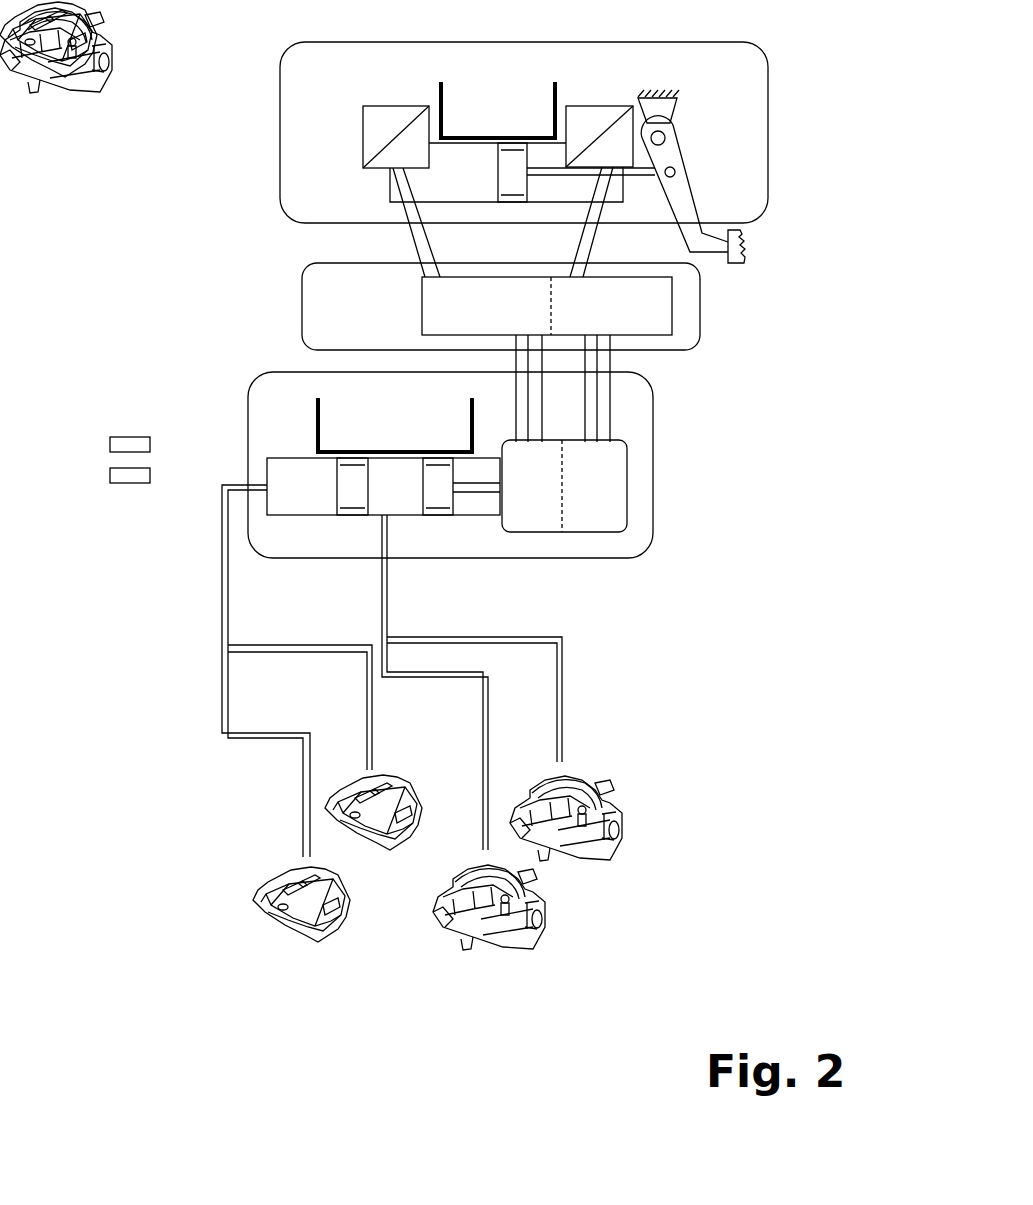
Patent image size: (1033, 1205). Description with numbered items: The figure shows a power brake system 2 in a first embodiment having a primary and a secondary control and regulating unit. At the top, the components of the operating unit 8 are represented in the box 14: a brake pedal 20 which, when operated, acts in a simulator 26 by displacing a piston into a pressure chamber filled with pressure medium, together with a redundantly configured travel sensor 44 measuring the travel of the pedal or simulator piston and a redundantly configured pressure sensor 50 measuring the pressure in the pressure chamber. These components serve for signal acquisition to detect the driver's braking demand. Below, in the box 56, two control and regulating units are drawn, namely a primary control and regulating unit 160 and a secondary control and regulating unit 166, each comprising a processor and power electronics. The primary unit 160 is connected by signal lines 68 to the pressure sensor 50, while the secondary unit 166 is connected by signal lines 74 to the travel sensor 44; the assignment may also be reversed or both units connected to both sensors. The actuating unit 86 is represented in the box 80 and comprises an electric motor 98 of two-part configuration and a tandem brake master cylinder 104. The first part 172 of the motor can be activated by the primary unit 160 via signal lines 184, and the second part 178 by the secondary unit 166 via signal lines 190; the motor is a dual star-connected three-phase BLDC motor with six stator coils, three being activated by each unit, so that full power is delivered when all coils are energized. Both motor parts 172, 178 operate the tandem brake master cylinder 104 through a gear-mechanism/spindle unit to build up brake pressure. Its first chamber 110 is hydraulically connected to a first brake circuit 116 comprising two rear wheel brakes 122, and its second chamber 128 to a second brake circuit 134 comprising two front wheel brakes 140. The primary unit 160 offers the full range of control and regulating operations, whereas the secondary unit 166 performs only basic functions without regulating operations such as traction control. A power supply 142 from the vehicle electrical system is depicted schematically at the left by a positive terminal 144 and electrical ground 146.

The power brake system 2 is at (213, 40).
The box 14 is at (768, 92).
The operating unit 8 is at (488, 78).
The simulator 26 is at (470, 202).
The pressure sensor 50 is at (393, 106).
The travel sensor 44 is at (602, 106).
The brake pedal 20 is at (680, 188).
The signal lines 68 is at (424, 245).
The signal lines 74 is at (582, 245).
The box 56 is at (700, 285).
The primary control and regulating unit 160 is at (422, 301).
The secondary control and regulating unit 166 is at (672, 318).
The signal lines 184 is at (542, 405).
The signal lines 190 is at (610, 423).
The box 80 is at (653, 513).
The actuating unit 86 is at (345, 405).
The second chamber 128 is at (290, 467).
The first chamber 110 is at (400, 507).
The tandem brake master cylinder 104 is at (470, 518).
The electric motor 98 is at (627, 470).
The first part 172 is at (532, 532).
The second part 178 is at (597, 532).
The power supply 142 is at (85, 419).
The positive terminal 144 is at (118, 445).
The electrical ground 146 is at (118, 477).
The second brake circuit 134 is at (222, 596).
The first brake circuit 116 is at (380, 608).
The front wheel brakes 140 is at (405, 785).
The rear wheel brakes 122 is at (586, 779).